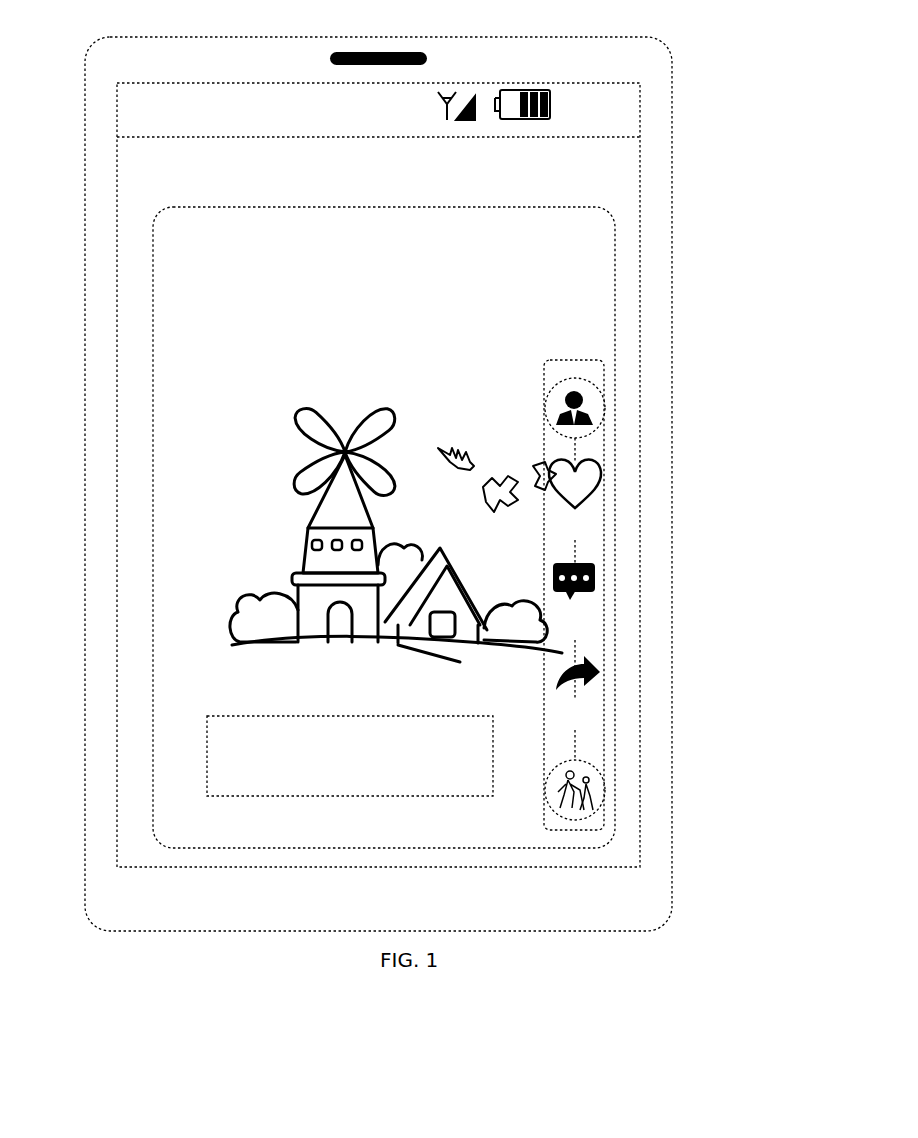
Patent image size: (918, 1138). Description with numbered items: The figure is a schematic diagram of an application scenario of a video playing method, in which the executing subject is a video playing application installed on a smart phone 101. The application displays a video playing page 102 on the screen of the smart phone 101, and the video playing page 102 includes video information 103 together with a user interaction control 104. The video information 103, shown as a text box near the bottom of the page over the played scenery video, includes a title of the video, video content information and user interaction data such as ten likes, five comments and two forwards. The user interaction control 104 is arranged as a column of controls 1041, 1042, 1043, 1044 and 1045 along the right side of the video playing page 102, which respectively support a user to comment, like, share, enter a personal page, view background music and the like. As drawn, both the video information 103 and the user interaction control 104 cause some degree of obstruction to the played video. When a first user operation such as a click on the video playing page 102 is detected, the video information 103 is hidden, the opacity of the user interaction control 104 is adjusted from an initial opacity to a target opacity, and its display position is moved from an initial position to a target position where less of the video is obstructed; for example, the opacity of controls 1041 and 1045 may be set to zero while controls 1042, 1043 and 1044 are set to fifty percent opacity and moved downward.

The smart phone 101 is at (672, 438).
The video playing page 102 is at (378, 475).
The video information 103 is at (217, 752).
The user interaction control 104 is at (603, 514).
The control 1041 is at (598, 393).
The control 1042 is at (597, 482).
The control 1043 is at (598, 583).
The control 1044 is at (600, 672).
The control 1045 is at (598, 793).